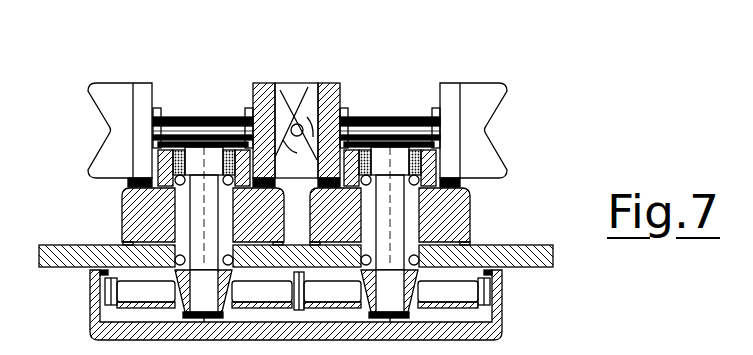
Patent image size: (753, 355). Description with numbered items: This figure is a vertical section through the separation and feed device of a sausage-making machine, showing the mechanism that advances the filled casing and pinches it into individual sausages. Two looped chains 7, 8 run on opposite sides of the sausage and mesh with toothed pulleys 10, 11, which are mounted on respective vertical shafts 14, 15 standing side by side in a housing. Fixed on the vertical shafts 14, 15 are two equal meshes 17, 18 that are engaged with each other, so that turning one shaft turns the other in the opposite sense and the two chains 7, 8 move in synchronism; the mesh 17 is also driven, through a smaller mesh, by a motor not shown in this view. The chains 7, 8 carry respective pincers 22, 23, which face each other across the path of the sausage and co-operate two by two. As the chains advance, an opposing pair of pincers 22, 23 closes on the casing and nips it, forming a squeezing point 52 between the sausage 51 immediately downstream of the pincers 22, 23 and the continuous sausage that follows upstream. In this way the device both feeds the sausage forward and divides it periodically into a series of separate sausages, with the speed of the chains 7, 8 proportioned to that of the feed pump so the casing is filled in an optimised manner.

The chain 7 is at (172, 118).
The chain 8 is at (412, 120).
The toothed pulley 10 is at (212, 132).
The toothed pulley 11 is at (383, 120).
The vertical shaft 14 is at (204, 222).
The vertical shaft 15 is at (392, 213).
The mesh 17 is at (113, 307).
The mesh 18 is at (486, 314).
The pincer 22 is at (112, 97).
The pincer 23 is at (477, 97).
The sausage 51 is at (299, 100).
The squeezing point 52 is at (340, 108).